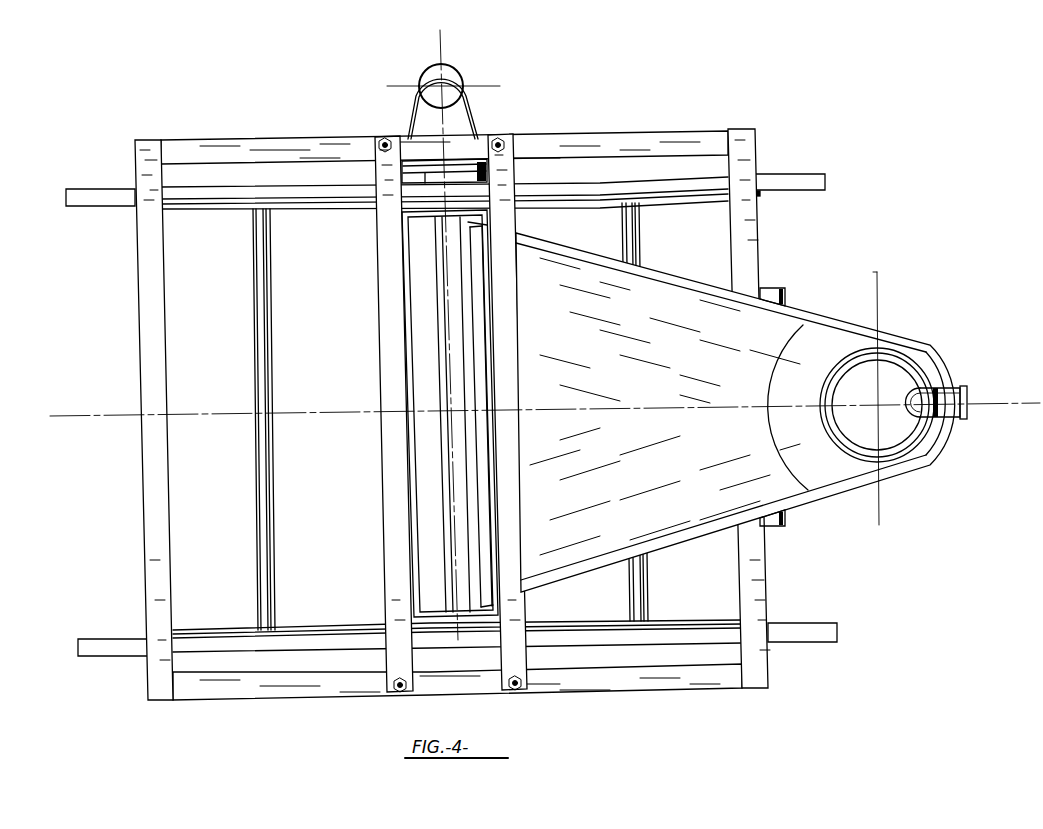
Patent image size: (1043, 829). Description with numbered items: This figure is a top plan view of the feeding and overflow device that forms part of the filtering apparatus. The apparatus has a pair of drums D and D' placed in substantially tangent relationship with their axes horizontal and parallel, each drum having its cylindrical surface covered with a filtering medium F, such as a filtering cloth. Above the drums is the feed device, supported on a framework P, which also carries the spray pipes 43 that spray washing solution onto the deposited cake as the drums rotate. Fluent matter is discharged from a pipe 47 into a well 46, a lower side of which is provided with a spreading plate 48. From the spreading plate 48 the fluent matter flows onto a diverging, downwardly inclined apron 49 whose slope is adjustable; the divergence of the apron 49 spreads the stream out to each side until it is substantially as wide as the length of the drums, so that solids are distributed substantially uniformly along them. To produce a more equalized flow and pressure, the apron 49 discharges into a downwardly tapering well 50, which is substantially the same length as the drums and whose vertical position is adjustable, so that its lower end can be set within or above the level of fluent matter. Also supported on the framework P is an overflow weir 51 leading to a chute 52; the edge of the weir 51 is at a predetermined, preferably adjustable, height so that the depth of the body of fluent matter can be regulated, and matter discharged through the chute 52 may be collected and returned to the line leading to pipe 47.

The framework P is at (678, 137).
The filtering medium F is at (683, 681).
The drum D is at (128, 420).
The drum D' is at (777, 408).
The spray pipes 43 is at (265, 380).
The well 46 is at (913, 367).
The pipe 47 is at (953, 397).
The spreading plate 48 is at (817, 345).
The apron 49 is at (773, 330).
The downwardly tapering well 50 is at (432, 518).
The overflow weir 51 is at (472, 175).
The chute 52 is at (455, 72).